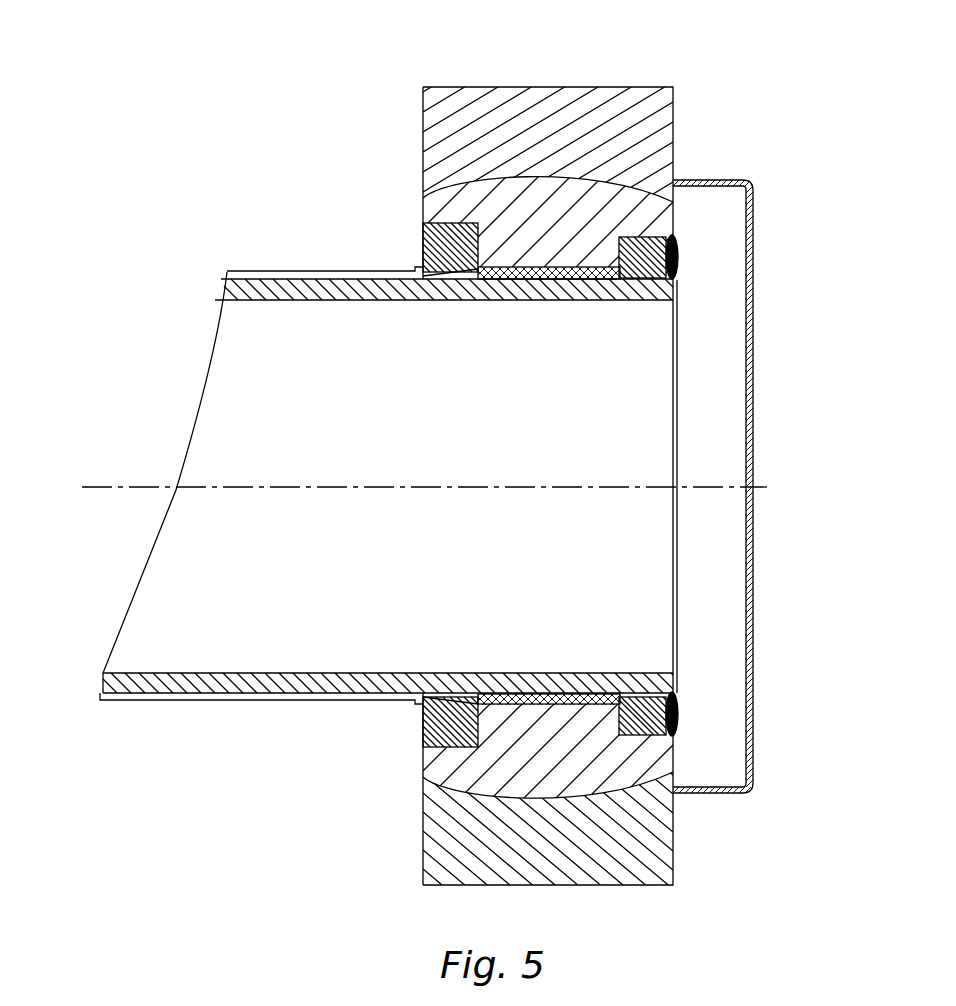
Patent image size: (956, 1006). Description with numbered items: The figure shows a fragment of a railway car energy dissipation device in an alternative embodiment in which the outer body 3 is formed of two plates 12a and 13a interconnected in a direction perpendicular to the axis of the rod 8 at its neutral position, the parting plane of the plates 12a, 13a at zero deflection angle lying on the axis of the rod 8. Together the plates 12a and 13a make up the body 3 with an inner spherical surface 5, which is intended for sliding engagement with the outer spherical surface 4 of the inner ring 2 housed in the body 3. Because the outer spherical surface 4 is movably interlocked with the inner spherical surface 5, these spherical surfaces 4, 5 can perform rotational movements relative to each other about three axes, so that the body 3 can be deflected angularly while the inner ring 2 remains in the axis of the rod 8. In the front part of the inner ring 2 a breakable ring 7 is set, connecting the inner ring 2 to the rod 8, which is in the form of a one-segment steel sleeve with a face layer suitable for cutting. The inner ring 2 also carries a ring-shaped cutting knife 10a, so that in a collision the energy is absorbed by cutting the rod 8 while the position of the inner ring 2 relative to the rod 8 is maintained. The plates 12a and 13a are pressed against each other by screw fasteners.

The inner ring 2 is at (515, 208).
The outer body 3 is at (677, 141).
The outer spherical surface 4 is at (512, 176).
The inner spherical surface 5 is at (530, 175).
The breakable ring 7 is at (648, 243).
The rod 8 is at (402, 595).
The cutting knife 10a is at (450, 720).
The plate 12a is at (588, 108).
The plate 13a is at (613, 850).